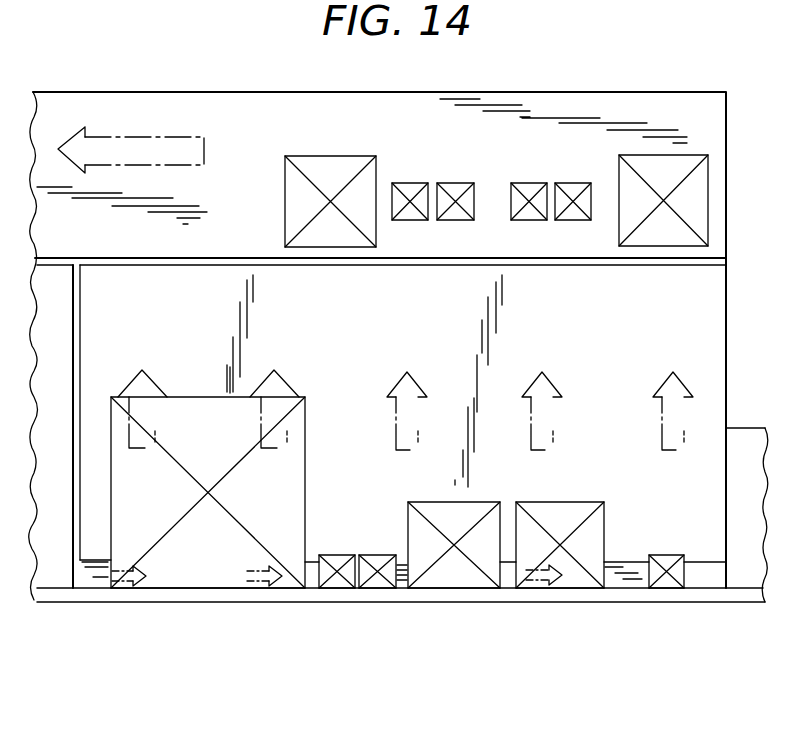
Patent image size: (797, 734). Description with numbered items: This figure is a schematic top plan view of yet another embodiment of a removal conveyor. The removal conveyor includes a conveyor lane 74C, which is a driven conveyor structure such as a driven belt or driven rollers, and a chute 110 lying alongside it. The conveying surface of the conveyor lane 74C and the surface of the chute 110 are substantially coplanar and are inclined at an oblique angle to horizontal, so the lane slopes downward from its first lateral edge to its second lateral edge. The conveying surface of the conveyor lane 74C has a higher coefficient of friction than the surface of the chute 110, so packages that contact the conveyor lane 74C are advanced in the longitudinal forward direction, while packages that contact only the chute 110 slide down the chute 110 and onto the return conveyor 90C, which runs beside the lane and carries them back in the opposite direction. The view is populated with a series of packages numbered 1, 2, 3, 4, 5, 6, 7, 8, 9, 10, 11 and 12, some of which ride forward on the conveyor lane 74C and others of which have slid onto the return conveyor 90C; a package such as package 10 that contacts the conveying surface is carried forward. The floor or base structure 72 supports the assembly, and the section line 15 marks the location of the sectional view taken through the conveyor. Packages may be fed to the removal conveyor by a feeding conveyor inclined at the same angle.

The return conveyor 90C is at (661, 108).
The chute 110 is at (176, 312).
The floor / base plate 72 is at (197, 594).
The conveyor lane 74C is at (313, 574).
The section line for FIG. 15 is at (695, 456).
The station 1 unit 1 is at (208, 479).
The station 2 unit 2 is at (663, 200).
The station 3 unit 3 is at (573, 201).
The station 4 unit 4 is at (529, 201).
The station 5 unit 5 is at (337, 571).
The station 6 unit 6 is at (377, 571).
The station 7 unit 7 is at (454, 545).
The station 8 unit 8 is at (455, 201).
The station 9 unit 9 is at (410, 201).
The package 10 is at (560, 545).
The station 11 unit 11 is at (666, 571).
The station 12 unit 12 is at (330, 201).